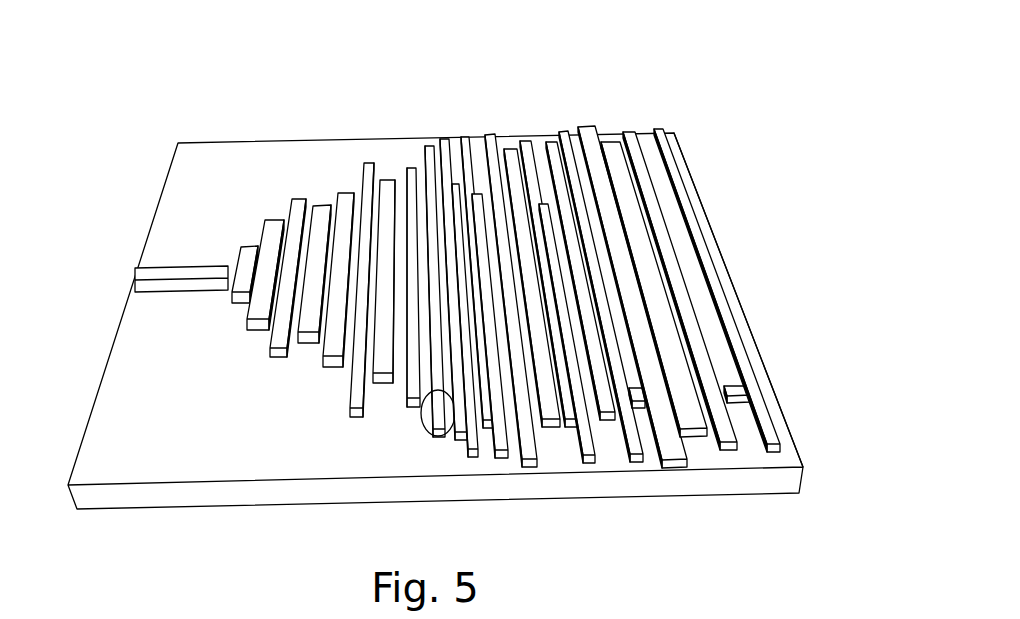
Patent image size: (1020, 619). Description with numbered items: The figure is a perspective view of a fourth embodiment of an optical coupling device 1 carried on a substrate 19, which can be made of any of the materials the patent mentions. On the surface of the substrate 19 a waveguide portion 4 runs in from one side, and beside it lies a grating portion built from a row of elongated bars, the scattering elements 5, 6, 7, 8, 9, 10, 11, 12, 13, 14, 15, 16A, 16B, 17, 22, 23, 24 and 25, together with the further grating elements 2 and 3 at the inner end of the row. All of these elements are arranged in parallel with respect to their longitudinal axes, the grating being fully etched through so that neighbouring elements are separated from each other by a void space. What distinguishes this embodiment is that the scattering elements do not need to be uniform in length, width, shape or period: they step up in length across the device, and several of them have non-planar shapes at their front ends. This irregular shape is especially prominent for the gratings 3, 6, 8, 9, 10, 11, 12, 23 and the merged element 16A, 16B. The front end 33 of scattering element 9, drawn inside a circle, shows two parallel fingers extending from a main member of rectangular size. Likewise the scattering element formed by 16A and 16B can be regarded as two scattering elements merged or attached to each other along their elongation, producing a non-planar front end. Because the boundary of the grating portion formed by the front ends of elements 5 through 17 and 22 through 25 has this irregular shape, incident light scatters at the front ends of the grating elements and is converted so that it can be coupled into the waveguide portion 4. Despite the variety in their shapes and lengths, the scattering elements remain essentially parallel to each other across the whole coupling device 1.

The antenna device / first radiating element 1 is at (238, 304).
The second radiating element 2 is at (255, 331).
The grating 3 is at (276, 358).
The waveguide portion 4 is at (190, 268).
The scattering element 5 is at (330, 368).
The grating 6 is at (355, 418).
The scattering element 7 is at (382, 384).
The grating 8 is at (412, 408).
The scattering element 9 is at (428, 150).
The grating 10 is at (446, 143).
The grating 11 is at (470, 148).
The grating 12 is at (489, 140).
The scattering element 13 is at (511, 152).
The scattering element 14 is at (532, 145).
The scattering element 15 is at (552, 148).
The scattering element 16A is at (566, 136).
The scattering element 16B is at (637, 409).
The scattering element 17 is at (592, 130).
The substrate 19 is at (755, 358).
The scattering element 22 is at (614, 145).
The grating 23 is at (634, 134).
The scattering element 24 is at (660, 155).
The scattering element 25 is at (684, 160).
The front end 33 is at (432, 437).